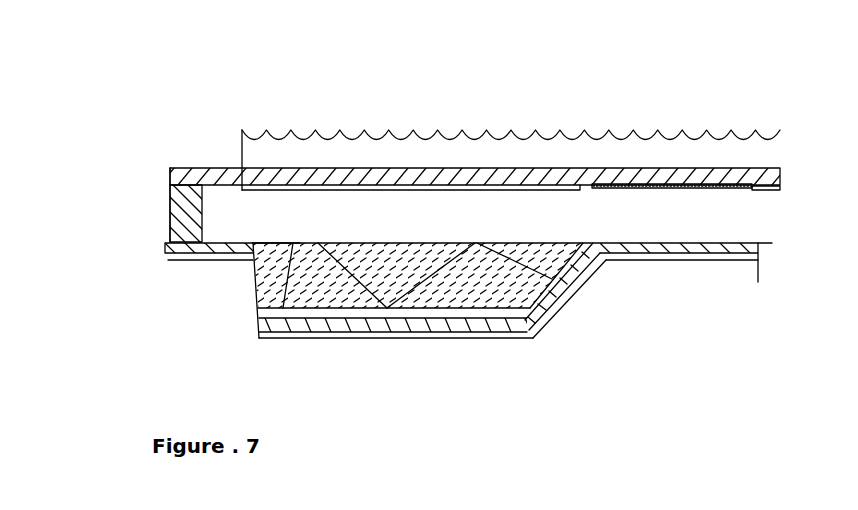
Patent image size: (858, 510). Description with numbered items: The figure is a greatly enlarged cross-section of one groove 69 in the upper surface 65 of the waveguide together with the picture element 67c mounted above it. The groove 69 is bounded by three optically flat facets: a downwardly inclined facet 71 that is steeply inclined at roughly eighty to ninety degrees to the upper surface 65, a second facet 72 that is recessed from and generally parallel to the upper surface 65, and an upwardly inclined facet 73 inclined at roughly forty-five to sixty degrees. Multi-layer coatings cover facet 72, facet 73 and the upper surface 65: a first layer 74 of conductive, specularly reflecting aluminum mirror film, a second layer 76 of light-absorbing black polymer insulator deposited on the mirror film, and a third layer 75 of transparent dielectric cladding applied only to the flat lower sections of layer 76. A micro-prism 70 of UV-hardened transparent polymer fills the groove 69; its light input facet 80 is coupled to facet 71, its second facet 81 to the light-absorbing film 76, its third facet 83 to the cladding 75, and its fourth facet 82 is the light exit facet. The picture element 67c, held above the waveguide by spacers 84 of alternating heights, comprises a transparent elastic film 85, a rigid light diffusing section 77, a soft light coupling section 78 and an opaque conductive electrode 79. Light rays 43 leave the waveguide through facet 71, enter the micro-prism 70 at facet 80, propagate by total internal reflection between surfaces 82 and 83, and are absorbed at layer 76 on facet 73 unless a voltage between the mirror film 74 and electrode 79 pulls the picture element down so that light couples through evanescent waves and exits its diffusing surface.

The light rays 43 is at (291, 252).
The upper surface 65 is at (683, 262).
The picture element 67c is at (735, 102).
The groove 69 is at (362, 235).
The micro-prism 70 is at (417, 278).
The downwardly inclined facet 71 is at (257, 292).
The second facet 72 is at (498, 338).
The upwardly inclined facet 73 is at (570, 303).
The first layer 74 is at (435, 333).
The third layer 75 is at (360, 314).
The second layer 76 is at (577, 277).
The light diffusing section 77 is at (333, 150).
The light coupling section 78 is at (453, 190).
The electrode 79 is at (637, 187).
The light input facet 80 is at (269, 262).
The second facet 81 is at (577, 260).
The light exit facet 82 is at (450, 243).
The third facet 83 is at (291, 252).
The spacer 84 is at (170, 208).
The transparent elastic film 85 is at (170, 173).